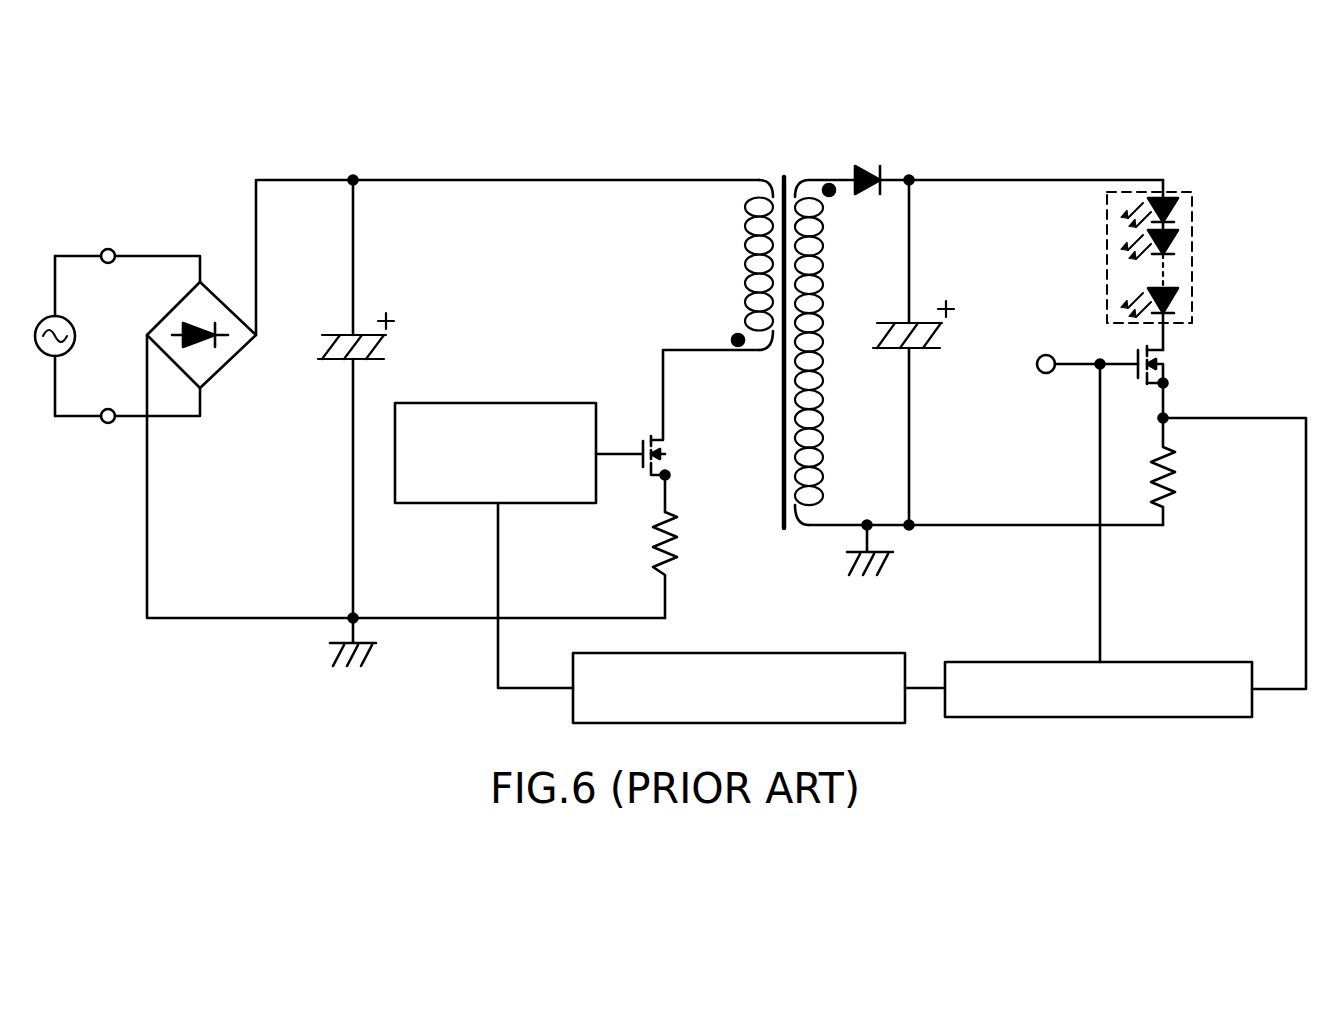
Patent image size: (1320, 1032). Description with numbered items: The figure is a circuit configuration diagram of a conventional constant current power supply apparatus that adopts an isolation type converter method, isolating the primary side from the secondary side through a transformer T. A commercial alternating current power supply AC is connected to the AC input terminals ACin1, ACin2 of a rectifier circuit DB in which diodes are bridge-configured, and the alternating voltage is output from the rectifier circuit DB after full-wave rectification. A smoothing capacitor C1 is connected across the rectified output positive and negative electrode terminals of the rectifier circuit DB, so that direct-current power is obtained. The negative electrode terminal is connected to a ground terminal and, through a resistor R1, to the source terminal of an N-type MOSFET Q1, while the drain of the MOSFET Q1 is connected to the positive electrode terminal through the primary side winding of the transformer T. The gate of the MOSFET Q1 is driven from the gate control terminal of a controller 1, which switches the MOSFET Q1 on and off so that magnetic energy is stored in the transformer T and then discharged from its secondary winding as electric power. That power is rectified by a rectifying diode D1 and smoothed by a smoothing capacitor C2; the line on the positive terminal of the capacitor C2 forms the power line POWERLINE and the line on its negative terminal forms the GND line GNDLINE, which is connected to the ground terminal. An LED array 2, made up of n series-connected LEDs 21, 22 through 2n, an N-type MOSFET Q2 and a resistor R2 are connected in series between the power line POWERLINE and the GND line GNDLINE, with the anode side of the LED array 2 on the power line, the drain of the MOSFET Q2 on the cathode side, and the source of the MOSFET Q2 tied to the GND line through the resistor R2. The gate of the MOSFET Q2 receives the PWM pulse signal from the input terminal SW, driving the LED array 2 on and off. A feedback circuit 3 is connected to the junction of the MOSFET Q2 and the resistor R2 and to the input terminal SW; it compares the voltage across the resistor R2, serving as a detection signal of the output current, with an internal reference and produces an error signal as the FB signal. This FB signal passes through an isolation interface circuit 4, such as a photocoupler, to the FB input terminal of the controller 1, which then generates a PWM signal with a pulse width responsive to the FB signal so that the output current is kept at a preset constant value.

The controller 1 is at (452, 403).
The LED array 2 is at (1151, 265).
The LED 21 is at (1178, 208).
The LED 22 is at (1178, 240).
The LED 2n is at (1178, 298).
The feedback circuit 3 is at (1043, 663).
The isolation interface circuit 4 is at (733, 653).
The commercial alternating current power supply AC is at (43, 336).
The AC input terminal ACin1 is at (127, 250).
The AC input terminal ACin2 is at (127, 424).
The rectifier circuit DB is at (210, 338).
The smoothing capacitor C1 is at (371, 399).
The smoothing capacitor C2 is at (896, 352).
The N-type MOSFET Q1 is at (648, 436).
The N-type MOSFET Q2 is at (1138, 346).
The resistor R1 is at (686, 565).
The resistor R2 is at (1183, 471).
The transformer T is at (793, 338).
The rectifying diode D1 is at (1009, 198).
The input terminal SW is at (1069, 349).
The power line POWERLINE is at (968, 180).
The GND line GNDLINE is at (938, 525).